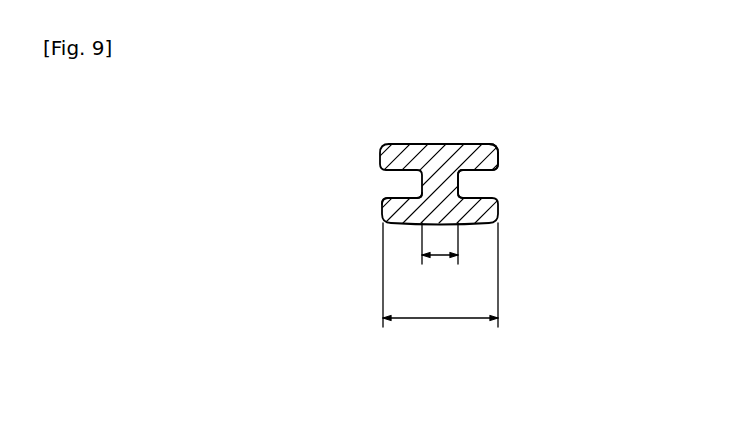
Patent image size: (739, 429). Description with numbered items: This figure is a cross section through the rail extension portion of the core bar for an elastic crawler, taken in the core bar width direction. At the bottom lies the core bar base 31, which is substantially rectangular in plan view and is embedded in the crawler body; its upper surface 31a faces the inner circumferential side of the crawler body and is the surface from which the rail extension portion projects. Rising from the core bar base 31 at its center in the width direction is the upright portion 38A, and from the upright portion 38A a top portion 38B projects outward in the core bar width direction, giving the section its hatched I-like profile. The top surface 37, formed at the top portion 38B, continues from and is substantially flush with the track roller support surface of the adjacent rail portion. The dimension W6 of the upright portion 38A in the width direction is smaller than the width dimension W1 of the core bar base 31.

The core bar base 31 is at (500, 208).
The upper surface 31a is at (405, 198).
The top surface 37 is at (461, 144).
The upright portion 38A is at (458, 182).
The top portion 38B is at (498, 150).
The dimension in the core bar width direction of the upright portions W6 is at (441, 258).
The width dimension of the core bar base W1 is at (446, 321).